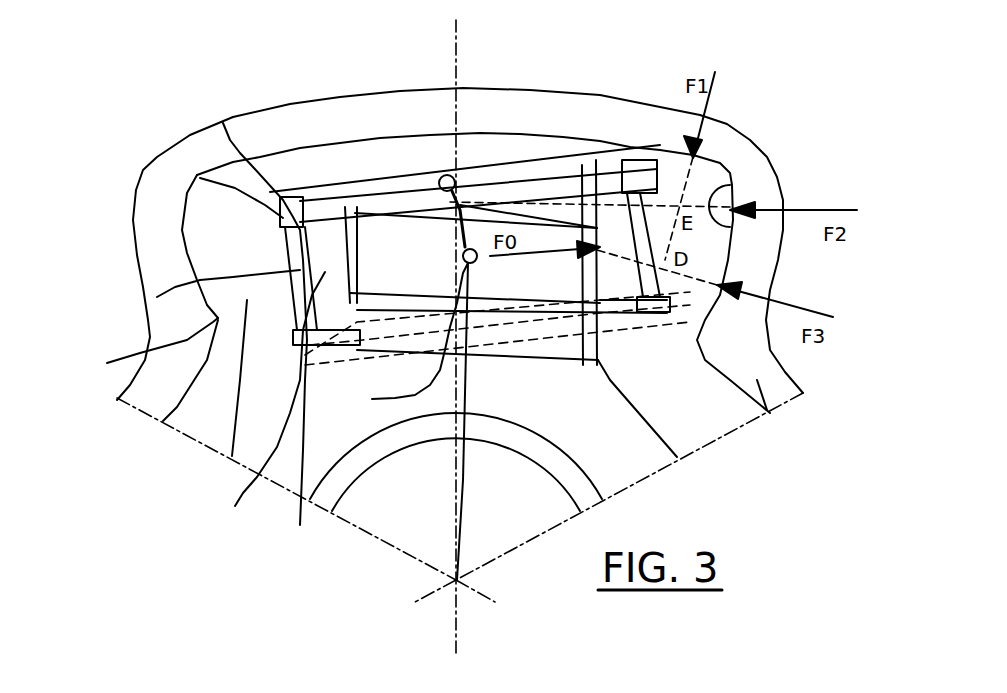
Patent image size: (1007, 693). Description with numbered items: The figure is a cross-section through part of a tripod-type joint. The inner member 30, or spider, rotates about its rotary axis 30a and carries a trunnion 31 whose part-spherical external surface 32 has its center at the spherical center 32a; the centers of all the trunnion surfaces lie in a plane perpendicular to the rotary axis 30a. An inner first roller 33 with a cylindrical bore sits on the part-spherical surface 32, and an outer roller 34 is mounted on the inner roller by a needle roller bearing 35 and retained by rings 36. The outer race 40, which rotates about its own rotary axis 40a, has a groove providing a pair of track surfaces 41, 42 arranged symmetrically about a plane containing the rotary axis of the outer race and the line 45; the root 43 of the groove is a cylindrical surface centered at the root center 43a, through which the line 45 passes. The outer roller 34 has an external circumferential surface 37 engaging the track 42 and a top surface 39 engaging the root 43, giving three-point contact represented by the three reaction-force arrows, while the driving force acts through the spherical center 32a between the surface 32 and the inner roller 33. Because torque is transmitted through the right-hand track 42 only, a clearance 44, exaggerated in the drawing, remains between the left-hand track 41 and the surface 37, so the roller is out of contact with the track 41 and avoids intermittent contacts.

The inner member 30 is at (456, 462).
The rotary axis of the inner member 30a is at (495, 460).
The trunnion 31 is at (480, 203).
The part-spherical external surface 32 is at (352, 159).
The center of the part-spherical surface 32a is at (396, 338).
The inner first roller 33 is at (235, 506).
The outer roller 34 is at (176, 388).
The needle roller bearing 35 is at (157, 297).
The rings 36 is at (223, 123).
The external circumferential surface 37 is at (781, 299).
The surface at the top of the outer roller 39 is at (157, 157).
The outer race 40 is at (725, 408).
The rotary axis of the outer race 40a is at (286, 500).
The track surface 41 is at (190, 234).
The track surface 42 is at (767, 158).
The root of the track 43 is at (464, 139).
The center of the root cylindrical surface 43a is at (629, 497).
The clearance 44 is at (107, 363).
The line 45 is at (482, 337).